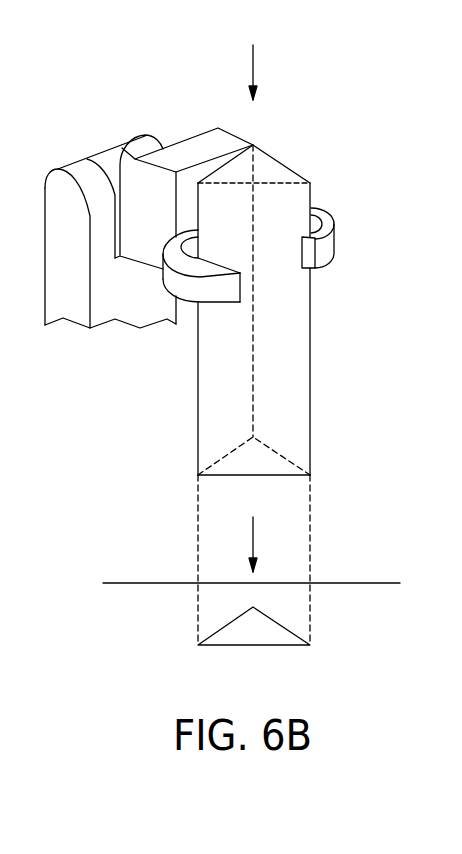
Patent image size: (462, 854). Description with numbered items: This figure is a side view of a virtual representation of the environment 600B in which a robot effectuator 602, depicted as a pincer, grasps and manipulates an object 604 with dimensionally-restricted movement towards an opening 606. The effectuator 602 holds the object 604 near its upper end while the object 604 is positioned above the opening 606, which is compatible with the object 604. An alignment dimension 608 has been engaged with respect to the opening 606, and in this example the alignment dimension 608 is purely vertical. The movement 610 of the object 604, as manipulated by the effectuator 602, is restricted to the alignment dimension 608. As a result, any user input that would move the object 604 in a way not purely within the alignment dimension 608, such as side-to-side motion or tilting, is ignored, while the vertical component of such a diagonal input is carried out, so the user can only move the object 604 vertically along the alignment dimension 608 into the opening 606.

The environment 600B is at (331, 150).
The robot effectuator 602 is at (182, 140).
The object 604 is at (312, 325).
The opening 606 is at (255, 645).
The alignment dimension 608 is at (198, 563).
The movement 610 is at (250, 67).